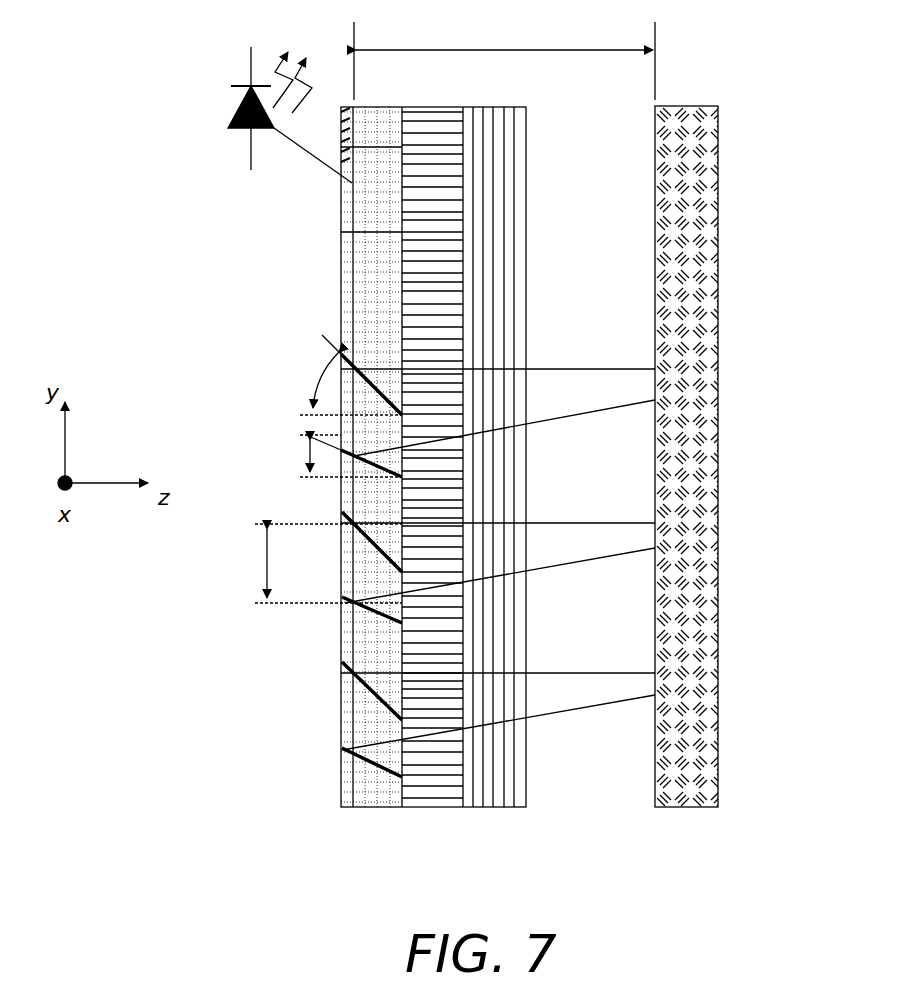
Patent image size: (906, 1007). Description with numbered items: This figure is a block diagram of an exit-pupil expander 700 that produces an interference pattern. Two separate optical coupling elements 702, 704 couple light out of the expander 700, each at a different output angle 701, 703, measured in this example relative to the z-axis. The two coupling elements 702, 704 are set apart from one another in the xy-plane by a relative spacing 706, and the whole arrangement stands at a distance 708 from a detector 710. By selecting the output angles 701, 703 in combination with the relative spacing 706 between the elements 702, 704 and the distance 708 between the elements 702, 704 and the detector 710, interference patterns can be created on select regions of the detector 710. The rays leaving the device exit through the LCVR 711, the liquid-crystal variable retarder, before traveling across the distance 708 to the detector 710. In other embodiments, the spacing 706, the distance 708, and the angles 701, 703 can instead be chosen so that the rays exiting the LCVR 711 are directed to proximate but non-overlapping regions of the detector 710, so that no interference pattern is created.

The exit-pupil expander 700 is at (372, 808).
The output angle 701 is at (313, 383).
The optical coupling element 702 is at (346, 749).
The output angle 703 is at (306, 462).
The optical coupling element 704 is at (346, 653).
The relative spacing 706 is at (265, 565).
The distance 708 is at (503, 50).
The detector 710 is at (718, 479).
The LCVR 711 is at (526, 258).